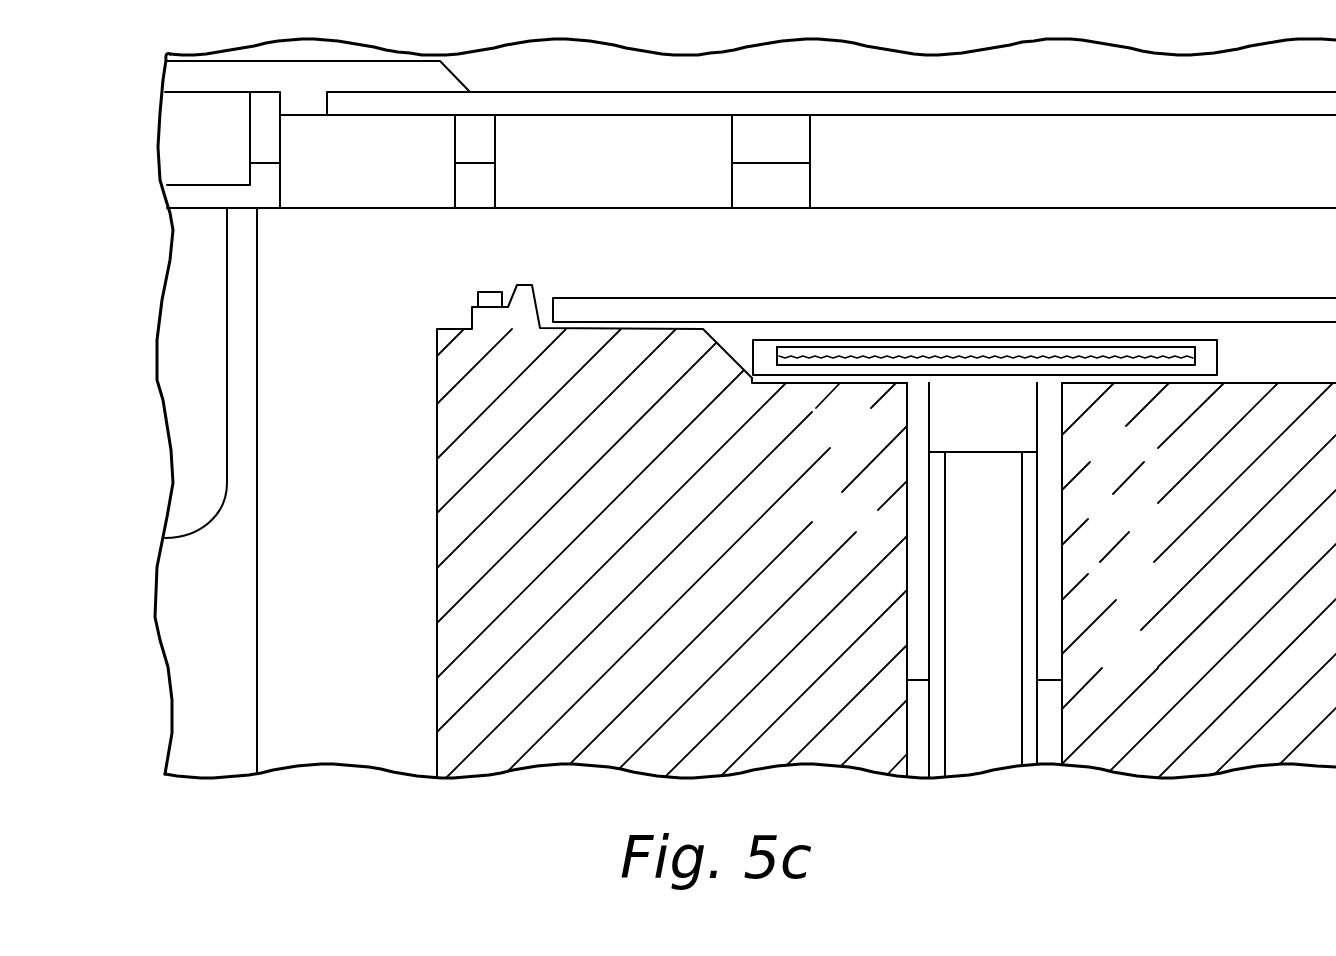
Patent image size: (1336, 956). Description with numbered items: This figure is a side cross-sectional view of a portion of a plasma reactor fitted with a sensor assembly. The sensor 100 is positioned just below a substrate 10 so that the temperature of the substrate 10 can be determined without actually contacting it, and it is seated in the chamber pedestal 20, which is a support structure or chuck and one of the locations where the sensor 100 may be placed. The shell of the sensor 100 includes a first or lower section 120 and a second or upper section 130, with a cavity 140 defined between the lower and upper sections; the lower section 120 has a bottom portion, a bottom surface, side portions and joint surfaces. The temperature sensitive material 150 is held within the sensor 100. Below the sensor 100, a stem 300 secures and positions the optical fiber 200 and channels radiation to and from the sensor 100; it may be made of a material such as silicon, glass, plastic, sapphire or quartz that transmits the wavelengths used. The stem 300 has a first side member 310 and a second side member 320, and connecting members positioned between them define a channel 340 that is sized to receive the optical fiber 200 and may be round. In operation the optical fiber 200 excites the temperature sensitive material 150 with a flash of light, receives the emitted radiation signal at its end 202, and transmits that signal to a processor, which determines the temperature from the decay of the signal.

The substrate 10 is at (606, 310).
The chamber pedestal 20 is at (440, 424).
The sensor 100 is at (742, 350).
The lower section 120 is at (770, 352).
The upper section 130 is at (862, 342).
The cavity 140 is at (955, 348).
The temperature sensitive material 150 is at (1055, 360).
The optical fiber 200 is at (1008, 572).
The end 202 is at (1010, 428).
The stem 300 is at (1052, 640).
The first side member 310 is at (905, 500).
The second side member 320 is at (1053, 503).
The channel 340 is at (958, 428).